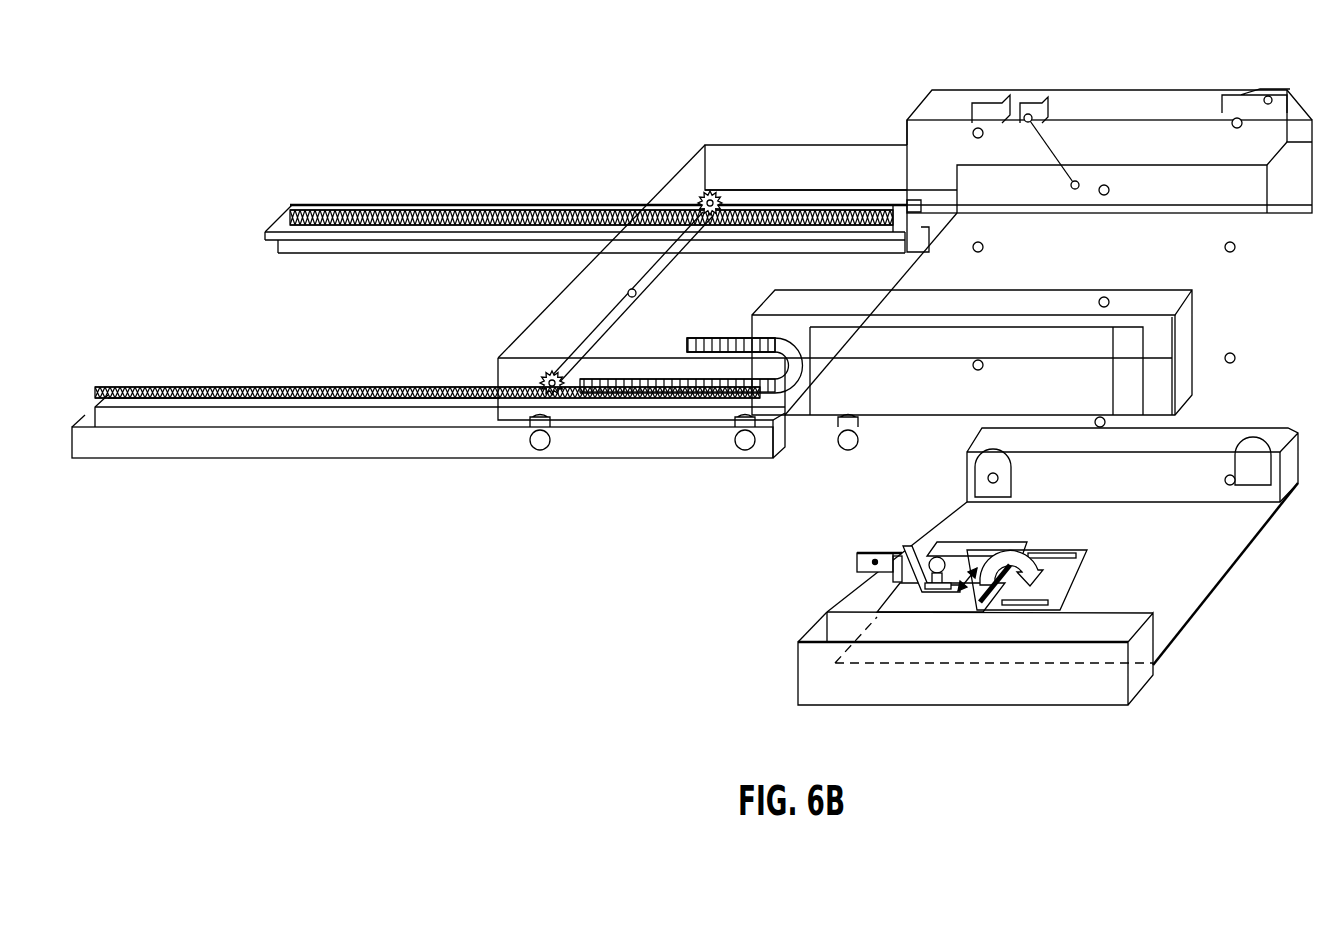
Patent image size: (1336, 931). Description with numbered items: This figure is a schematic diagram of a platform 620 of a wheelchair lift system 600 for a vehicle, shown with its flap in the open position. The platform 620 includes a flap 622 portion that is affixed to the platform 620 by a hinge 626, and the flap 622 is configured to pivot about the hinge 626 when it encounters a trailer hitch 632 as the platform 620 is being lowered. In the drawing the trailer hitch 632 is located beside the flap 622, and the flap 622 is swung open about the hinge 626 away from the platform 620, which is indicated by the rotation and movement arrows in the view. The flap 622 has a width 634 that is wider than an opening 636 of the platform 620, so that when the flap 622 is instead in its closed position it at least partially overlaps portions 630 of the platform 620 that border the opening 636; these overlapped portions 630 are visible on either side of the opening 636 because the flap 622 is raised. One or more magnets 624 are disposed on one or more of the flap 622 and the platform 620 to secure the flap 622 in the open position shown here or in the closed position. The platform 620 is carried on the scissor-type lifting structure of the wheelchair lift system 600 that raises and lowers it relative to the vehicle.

The wheelchair lift system 600 is at (310, 86).
The platform 620 is at (1193, 570).
The flap 622 is at (1060, 582).
The magnets 624 is at (1063, 552).
The hinge 626 is at (1015, 605).
The portions of the platform 630 is at (950, 552).
The trailer hitch 632 is at (868, 552).
The width 634 is at (1110, 560).
The opening 636 is at (978, 598).